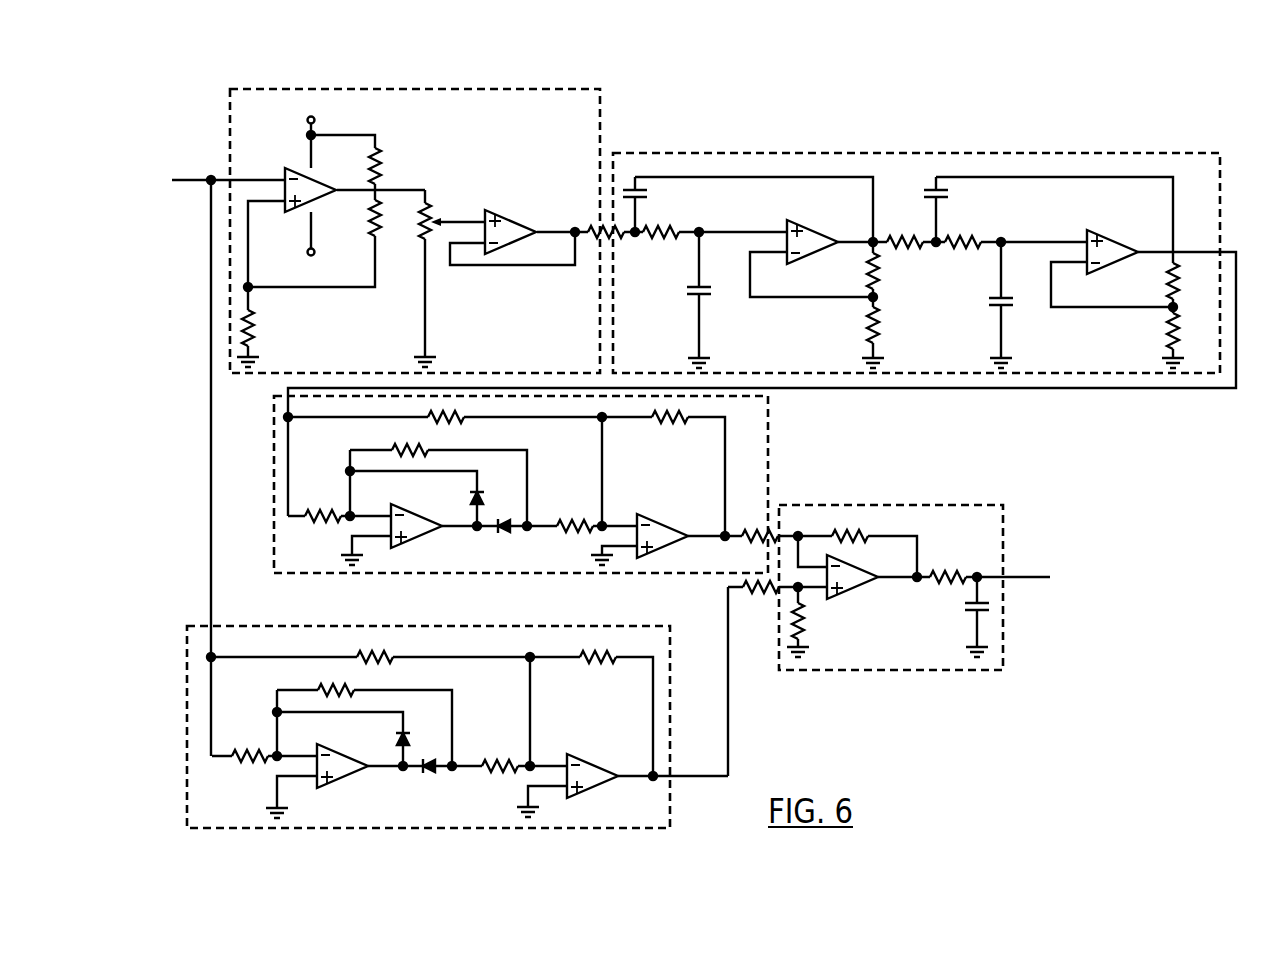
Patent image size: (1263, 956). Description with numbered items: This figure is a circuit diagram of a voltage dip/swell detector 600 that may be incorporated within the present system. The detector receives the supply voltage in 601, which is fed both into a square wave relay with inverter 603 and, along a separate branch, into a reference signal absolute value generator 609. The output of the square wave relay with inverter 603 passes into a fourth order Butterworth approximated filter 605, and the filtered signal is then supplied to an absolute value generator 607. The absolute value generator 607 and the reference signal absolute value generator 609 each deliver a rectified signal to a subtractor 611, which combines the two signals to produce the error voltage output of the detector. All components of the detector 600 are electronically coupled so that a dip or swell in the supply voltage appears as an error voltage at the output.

The voltage dip/swell detector 600 is at (157, 520).
The supply voltage in 601 is at (172, 182).
The square wave relay with inverter 603 is at (599, 118).
The 4th order Butterworth approximated filter 605 is at (900, 153).
The absolute value generator 607 is at (274, 493).
The reference signal absolute value generator 609 is at (187, 724).
The subtractor 611 is at (1055, 574).